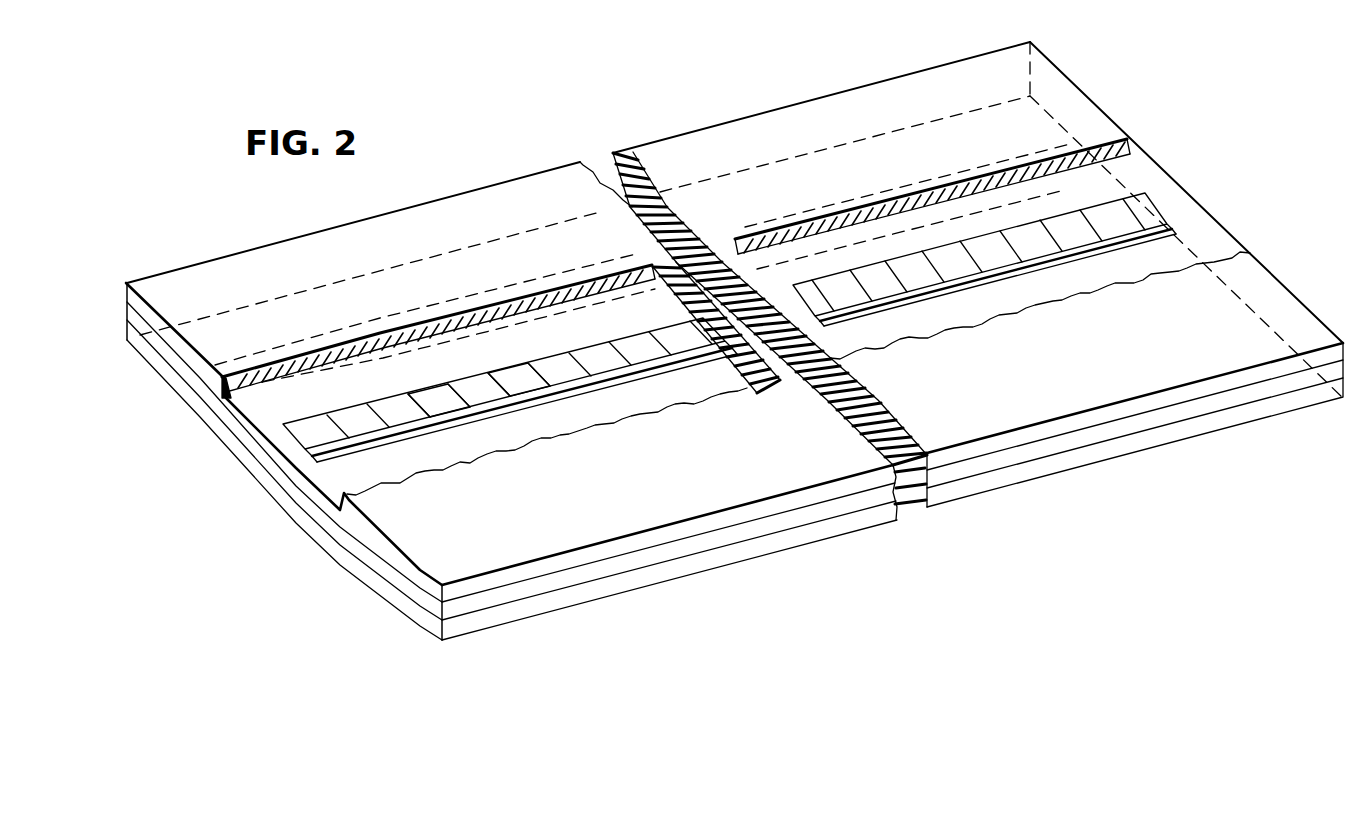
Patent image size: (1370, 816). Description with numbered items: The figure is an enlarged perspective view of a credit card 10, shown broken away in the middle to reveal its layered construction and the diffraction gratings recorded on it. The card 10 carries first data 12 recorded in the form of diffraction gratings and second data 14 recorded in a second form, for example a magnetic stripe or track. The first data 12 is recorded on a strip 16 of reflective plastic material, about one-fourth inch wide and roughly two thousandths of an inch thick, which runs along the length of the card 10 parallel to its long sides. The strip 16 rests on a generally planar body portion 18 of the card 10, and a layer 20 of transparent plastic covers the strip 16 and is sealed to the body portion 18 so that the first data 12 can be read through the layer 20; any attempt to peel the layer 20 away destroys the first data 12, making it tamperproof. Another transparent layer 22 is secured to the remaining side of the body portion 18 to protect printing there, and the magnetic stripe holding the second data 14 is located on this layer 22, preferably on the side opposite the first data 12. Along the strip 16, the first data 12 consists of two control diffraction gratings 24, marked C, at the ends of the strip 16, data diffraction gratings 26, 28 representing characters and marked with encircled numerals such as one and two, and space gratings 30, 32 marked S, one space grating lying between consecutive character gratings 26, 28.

The credit card 10 is at (722, 118).
The first data 12 is at (1050, 235).
The second data 14 is at (278, 403).
The strip 16 is at (283, 425).
The body portion 18 is at (300, 472).
The transparent layer 20 is at (366, 524).
The transparent layer 22 is at (393, 585).
The control diffraction gratings 24 is at (341, 420).
The data diffraction grating 26 is at (412, 418).
The data diffraction grating 28 is at (493, 396).
The space grating 30 is at (424, 397).
The space grating 32 is at (500, 380).